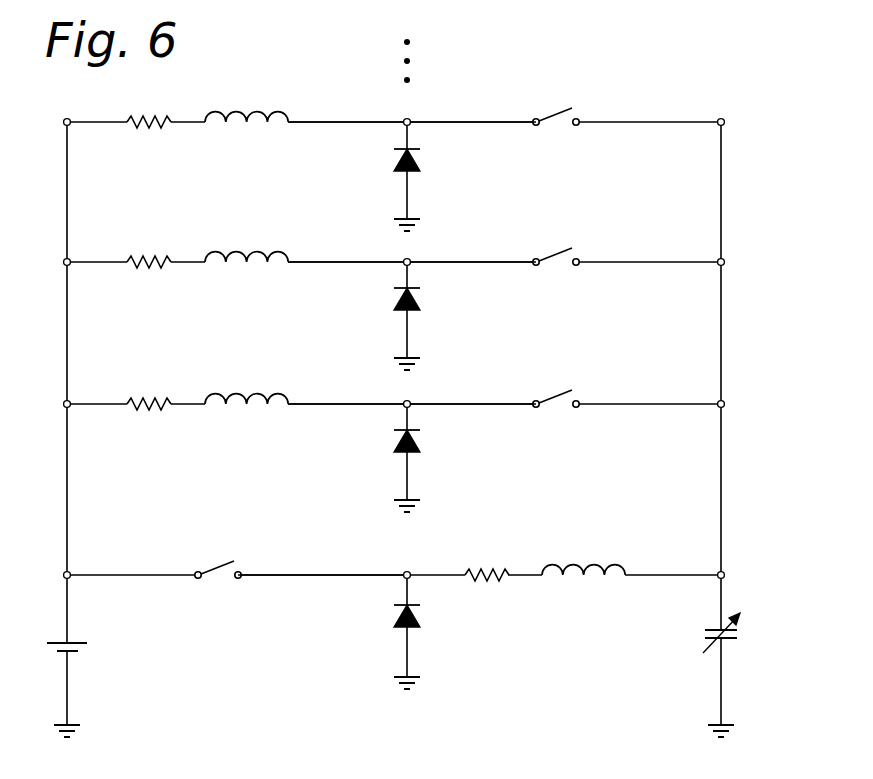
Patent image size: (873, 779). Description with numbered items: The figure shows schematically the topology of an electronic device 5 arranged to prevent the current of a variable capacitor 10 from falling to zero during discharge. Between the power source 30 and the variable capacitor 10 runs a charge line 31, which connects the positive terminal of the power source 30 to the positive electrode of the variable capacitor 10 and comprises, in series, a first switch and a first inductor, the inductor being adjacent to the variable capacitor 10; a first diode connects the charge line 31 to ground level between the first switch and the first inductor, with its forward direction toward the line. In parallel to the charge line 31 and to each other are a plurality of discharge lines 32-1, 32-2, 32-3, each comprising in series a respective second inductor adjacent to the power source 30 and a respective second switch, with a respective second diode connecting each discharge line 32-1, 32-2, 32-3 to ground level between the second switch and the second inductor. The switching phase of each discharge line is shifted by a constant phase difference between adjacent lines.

The electronic device 5 is at (391, 375).
The variable capacitor 10 is at (735, 641).
The power source 30 is at (56, 647).
The charge line 31 is at (288, 575).
The discharge line 32-1 is at (458, 404).
The discharge line 32-2 is at (450, 262).
The discharge line 32-3 is at (443, 122).